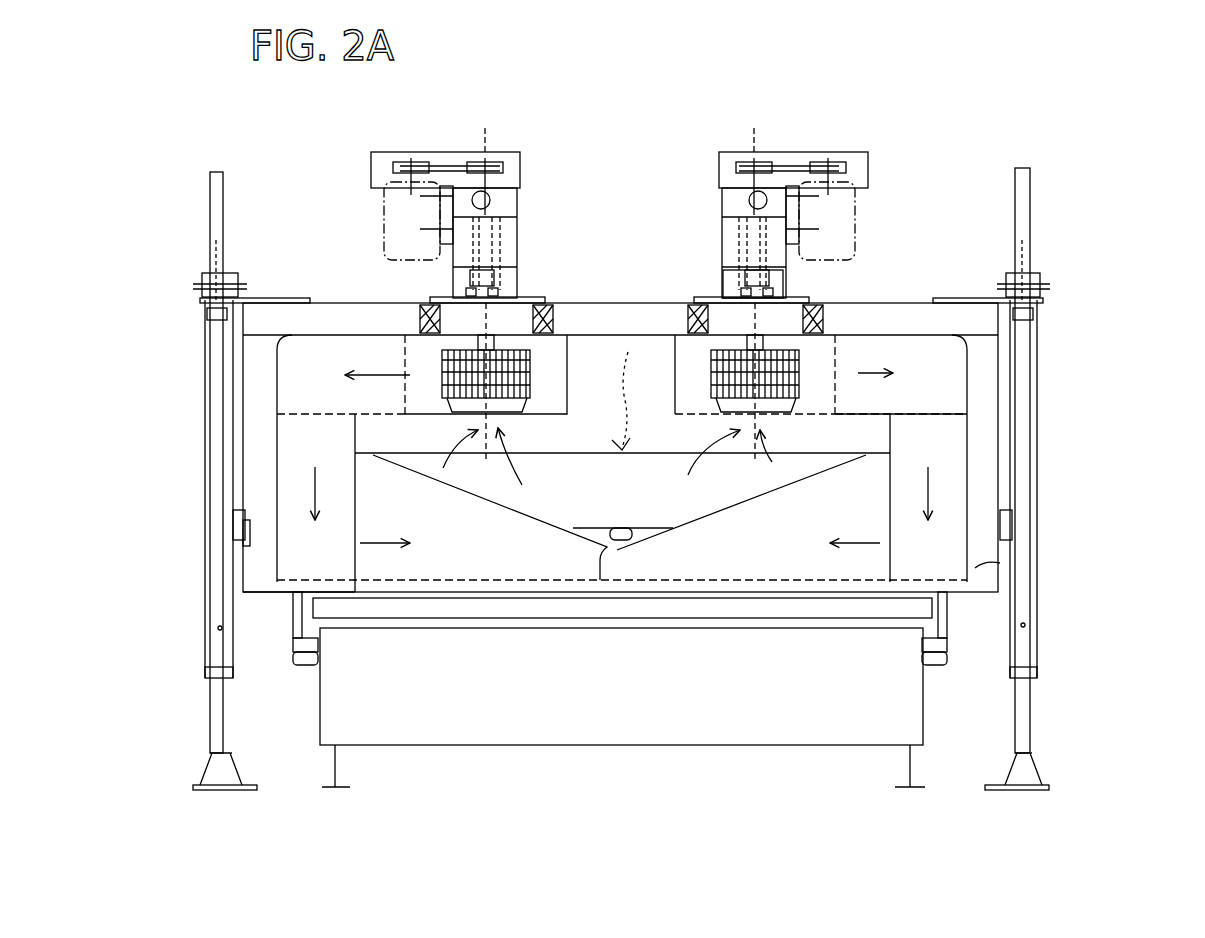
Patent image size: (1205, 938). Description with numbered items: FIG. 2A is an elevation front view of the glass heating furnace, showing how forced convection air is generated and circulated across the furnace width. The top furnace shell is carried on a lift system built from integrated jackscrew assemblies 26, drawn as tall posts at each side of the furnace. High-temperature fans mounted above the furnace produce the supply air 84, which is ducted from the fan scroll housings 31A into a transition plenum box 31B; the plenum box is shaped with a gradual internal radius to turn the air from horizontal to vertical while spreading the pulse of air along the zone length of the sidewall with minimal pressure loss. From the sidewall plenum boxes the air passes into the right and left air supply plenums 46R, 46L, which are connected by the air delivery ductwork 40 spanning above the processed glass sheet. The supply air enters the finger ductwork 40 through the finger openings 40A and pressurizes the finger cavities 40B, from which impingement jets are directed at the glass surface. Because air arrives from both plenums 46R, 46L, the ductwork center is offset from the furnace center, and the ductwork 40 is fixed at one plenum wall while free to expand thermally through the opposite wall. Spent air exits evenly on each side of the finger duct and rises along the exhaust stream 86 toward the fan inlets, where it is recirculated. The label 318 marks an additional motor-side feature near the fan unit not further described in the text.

The exhaust stream 86 is at (473, 455).
The fan scroll housing 31A is at (815, 360).
The motor 318 is at (717, 255).
The transition plenum box 31B is at (920, 385).
The supply air 84 is at (312, 456).
The air delivery ductwork 40 is at (848, 494).
The finger opening 40A is at (352, 580).
The finger cavity 40B is at (484, 545).
The left air supply plenum 46L is at (302, 553).
The right air supply plenum 46R is at (930, 557).
The jackscrew assembly 26 is at (1037, 580).